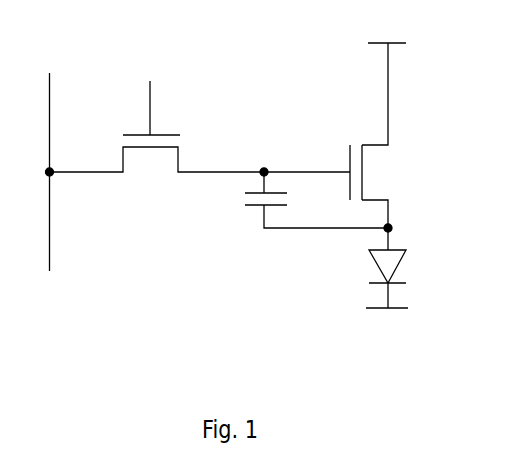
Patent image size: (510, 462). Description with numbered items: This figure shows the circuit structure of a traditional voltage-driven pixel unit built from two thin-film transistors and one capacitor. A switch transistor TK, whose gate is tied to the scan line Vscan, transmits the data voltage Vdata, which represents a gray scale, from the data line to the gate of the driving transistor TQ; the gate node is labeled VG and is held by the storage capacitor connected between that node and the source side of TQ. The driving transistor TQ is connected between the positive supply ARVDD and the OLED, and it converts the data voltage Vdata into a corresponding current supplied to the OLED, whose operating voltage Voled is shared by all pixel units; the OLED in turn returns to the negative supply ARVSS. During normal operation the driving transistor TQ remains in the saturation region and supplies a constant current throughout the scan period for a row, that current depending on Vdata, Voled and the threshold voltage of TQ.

The data voltage Vdata is at (47, 159).
The scan voltage line Vscan is at (151, 91).
The switch transistor TK is at (157, 167).
The gate node voltage / storage capacitor VG is at (316, 188).
The driving transistor TQ is at (386, 146).
The positive power supply ARVDD is at (385, 29).
The operating voltage of the OLED Voled is at (419, 268).
The negative power supply ARVSS is at (386, 329).